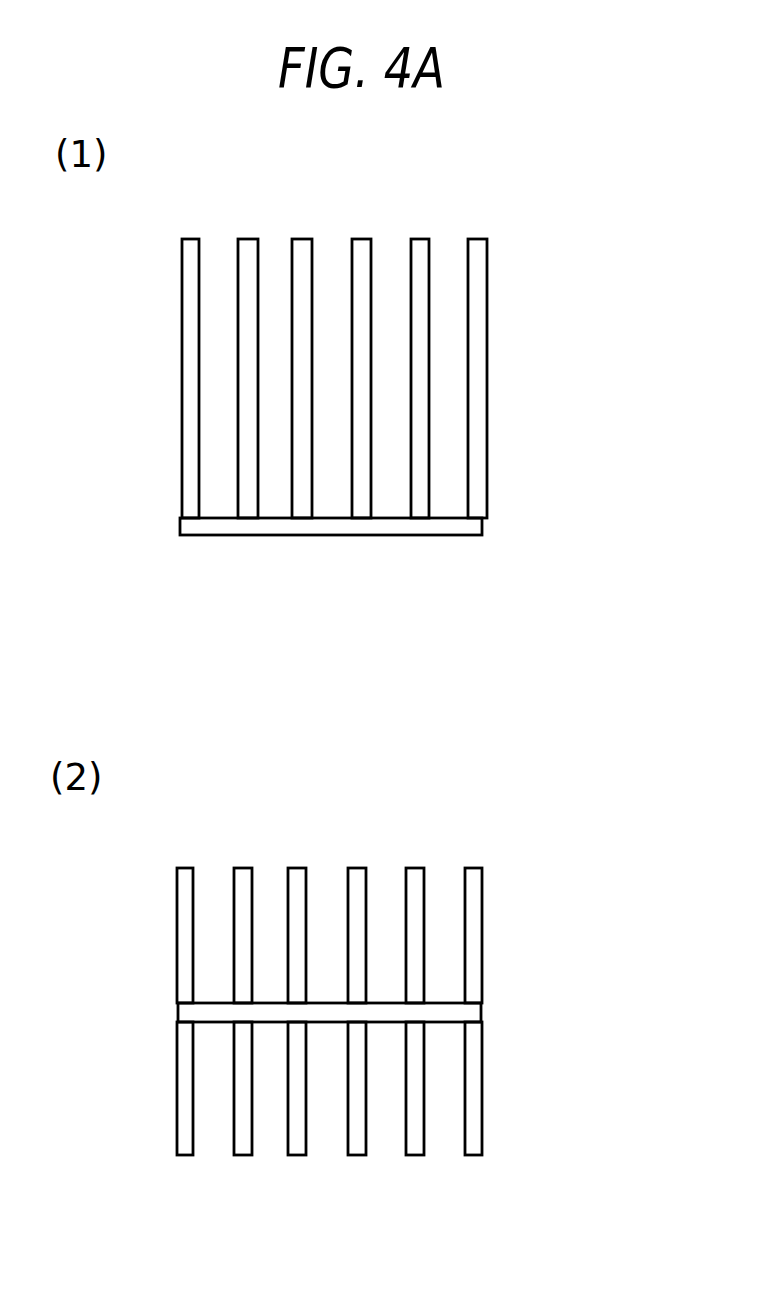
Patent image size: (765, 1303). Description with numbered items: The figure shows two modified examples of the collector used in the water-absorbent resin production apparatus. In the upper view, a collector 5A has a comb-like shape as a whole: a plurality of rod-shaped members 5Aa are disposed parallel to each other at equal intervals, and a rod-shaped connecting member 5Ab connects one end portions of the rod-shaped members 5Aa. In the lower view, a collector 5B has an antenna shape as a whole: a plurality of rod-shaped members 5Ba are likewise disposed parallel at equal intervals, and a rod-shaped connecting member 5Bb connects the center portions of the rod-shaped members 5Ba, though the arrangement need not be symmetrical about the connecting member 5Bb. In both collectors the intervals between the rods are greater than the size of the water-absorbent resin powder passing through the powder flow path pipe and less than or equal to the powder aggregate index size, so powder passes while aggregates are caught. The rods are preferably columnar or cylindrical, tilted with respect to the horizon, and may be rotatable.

The collector 5A is at (500, 199).
The rod-shaped members 5Aa is at (297, 410).
The rod-shaped connecting member 5Ab is at (268, 523).
The collector 5B is at (495, 828).
The rod-shaped members 5Ba is at (295, 1038).
The rod-shaped connecting member 5Bb is at (324, 1010).